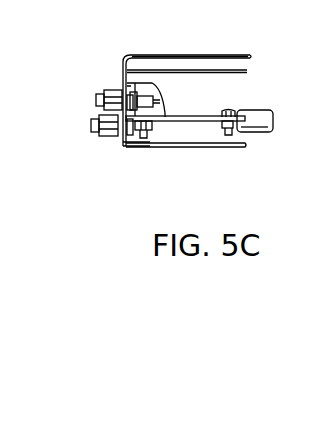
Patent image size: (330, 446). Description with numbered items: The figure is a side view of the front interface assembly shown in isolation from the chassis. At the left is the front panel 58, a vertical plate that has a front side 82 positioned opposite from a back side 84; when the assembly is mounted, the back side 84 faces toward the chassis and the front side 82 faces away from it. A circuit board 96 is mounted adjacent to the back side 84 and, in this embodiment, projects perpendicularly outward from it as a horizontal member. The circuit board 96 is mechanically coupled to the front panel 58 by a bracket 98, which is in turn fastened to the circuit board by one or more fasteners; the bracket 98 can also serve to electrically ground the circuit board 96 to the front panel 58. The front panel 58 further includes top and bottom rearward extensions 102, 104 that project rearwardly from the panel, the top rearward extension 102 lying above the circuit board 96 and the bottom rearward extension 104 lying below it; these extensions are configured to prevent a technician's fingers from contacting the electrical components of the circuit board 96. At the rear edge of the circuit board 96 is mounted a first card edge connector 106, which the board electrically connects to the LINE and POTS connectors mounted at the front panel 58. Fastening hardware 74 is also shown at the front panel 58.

The front panel 58 is at (124, 60).
The bolt and nut 74 is at (104, 100).
The front side 82 is at (112, 136).
The back side 84 is at (240, 72).
The circuit board 96 is at (188, 124).
The bracket 98 is at (172, 117).
The top rearward extension 102 is at (206, 54).
The bottom rearward extension 104 is at (214, 149).
The first card edge connector 106 is at (267, 133).